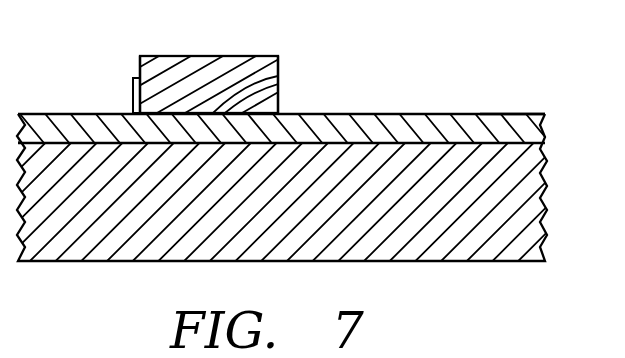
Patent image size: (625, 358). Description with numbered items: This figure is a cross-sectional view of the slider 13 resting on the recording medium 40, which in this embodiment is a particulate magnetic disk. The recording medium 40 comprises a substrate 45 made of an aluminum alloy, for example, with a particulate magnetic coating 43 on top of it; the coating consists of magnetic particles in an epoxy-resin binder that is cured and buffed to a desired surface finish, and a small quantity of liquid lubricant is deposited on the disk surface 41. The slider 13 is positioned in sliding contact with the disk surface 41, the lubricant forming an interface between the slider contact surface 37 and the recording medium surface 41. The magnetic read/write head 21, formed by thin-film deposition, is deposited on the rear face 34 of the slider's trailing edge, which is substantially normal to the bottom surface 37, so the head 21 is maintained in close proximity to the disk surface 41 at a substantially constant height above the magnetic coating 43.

The slider 13 is at (202, 56).
The magnetic read/write head 21 is at (133, 88).
The face of trailing edge 34 is at (140, 62).
The bottom surface 37 is at (280, 70).
The recording medium 40 is at (359, 92).
The disk surface 41 is at (440, 113).
The particulate magnetic coating 43 is at (515, 114).
The substrate 45 is at (335, 237).